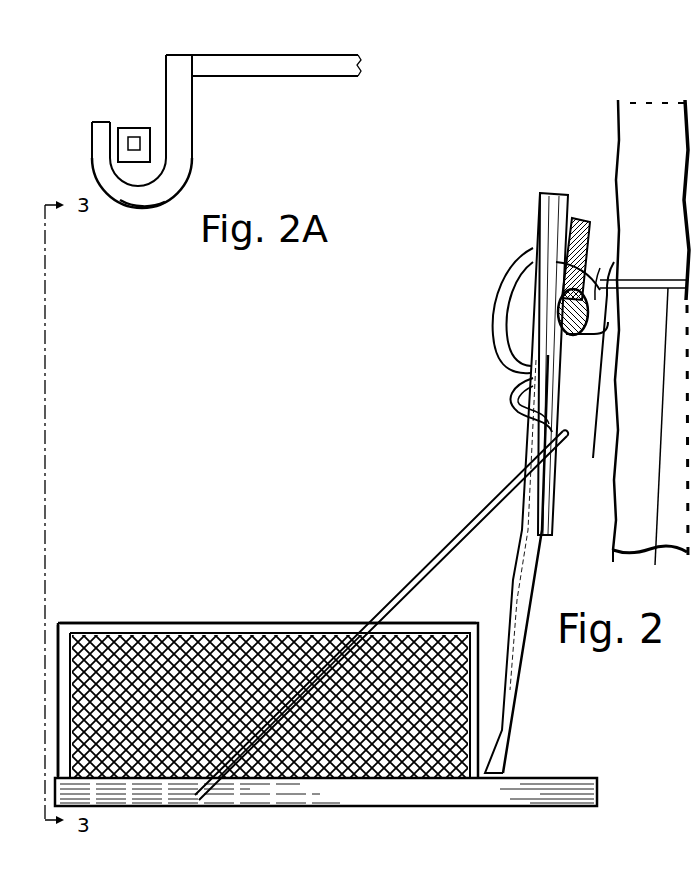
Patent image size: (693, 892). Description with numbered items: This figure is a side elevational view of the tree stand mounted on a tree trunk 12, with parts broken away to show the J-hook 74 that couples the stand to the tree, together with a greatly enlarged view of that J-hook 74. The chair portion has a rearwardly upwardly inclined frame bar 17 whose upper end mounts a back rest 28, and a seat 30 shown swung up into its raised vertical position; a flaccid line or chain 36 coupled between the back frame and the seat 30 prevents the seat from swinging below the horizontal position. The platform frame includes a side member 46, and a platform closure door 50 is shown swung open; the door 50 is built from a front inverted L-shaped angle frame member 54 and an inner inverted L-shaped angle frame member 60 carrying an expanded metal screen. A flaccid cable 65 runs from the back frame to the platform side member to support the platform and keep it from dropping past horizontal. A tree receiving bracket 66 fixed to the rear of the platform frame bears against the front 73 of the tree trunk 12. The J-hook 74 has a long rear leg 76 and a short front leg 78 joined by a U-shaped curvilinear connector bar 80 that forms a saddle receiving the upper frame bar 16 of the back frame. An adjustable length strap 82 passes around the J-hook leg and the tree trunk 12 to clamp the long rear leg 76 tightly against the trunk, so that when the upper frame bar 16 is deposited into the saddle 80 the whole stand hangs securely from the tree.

In FIG. 2, the tree trunk 12 is at (637, 178).
In FIG. 2A, the upper frame bar 16 is at (133, 128).
In FIG. 2, the upper frame bar 16 is at (604, 272).
In FIG. 2, the frame bar 17 is at (522, 535).
In FIG. 2, the back rest 28 is at (578, 216).
In FIG. 2, the seat 30 is at (545, 192).
In FIG. 2, the flaccid line or chain 36 is at (497, 370).
In FIG. 2, the side member 46 is at (258, 797).
In FIG. 2, the platform closure door 50 is at (157, 588).
In FIG. 2, the front inverted L-shaped angle frame member 54 is at (57, 632).
In FIG. 2, the inner inverted L-shaped angle frame member 60 is at (212, 623).
In FIG. 2, the flaccid cable 65 is at (437, 556).
In FIG. 2, the tree receiving bracket 66 is at (610, 785).
In FIG. 2, the front of tree trunk 73 is at (612, 538).
In FIG. 2A, the J-hook 74 is at (194, 128).
In FIG. 2, the J-hook 74 is at (608, 246).
In FIG. 2A, the long rear leg 76 is at (194, 98).
In FIG. 2A, the short front leg 78 is at (93, 144).
In FIG. 2A, the U-shaped curvilinear connector bar 80 is at (134, 205).
In FIG. 2A, the adjustable length strap 82 is at (320, 57).
In FIG. 2, the adjustable length strap 82 is at (657, 566).